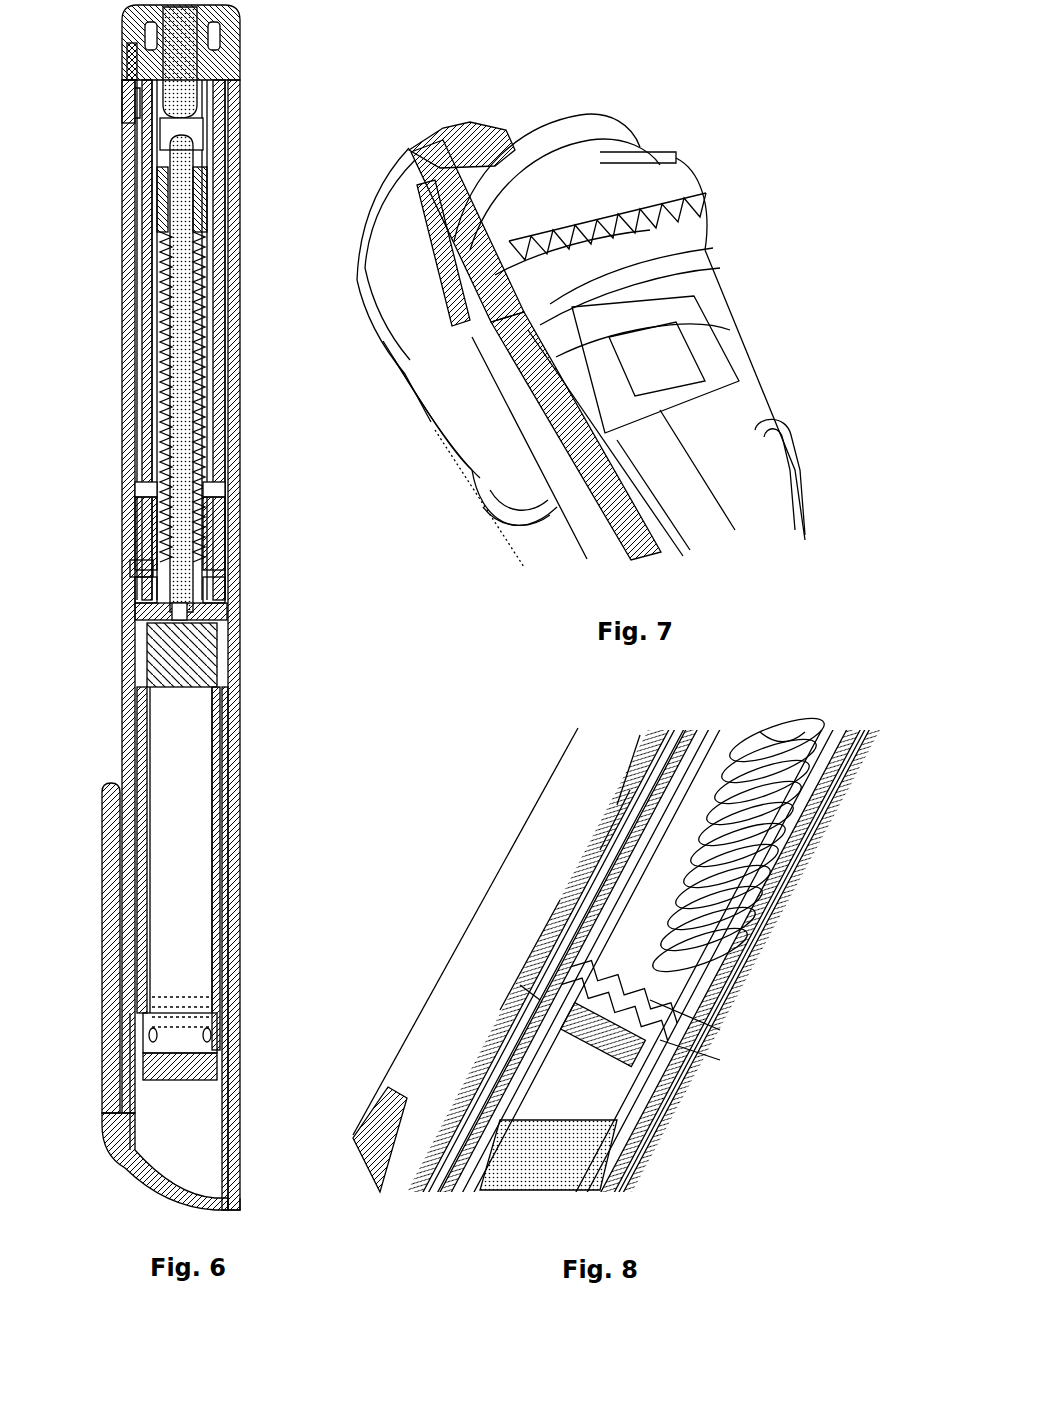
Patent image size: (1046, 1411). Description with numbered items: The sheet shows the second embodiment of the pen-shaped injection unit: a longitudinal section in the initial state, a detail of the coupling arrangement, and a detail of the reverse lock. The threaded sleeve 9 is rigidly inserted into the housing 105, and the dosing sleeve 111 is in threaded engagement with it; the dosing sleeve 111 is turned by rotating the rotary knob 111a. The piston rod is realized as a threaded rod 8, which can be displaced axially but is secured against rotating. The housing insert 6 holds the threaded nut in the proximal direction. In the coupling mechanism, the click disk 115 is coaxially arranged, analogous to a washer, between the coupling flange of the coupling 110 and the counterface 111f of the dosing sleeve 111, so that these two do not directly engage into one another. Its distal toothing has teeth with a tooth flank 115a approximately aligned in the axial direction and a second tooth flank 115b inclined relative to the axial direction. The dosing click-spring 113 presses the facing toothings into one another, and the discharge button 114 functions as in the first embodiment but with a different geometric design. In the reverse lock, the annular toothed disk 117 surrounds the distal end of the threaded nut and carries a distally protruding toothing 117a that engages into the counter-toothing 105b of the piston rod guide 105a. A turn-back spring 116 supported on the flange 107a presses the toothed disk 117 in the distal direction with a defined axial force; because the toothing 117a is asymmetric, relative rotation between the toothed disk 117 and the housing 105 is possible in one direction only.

In FIG. 6, the housing insert 6 is at (137, 495).
In FIG. 8, the housing insert 6 is at (617, 803).
In FIG. 6, the threaded rod 8 is at (178, 157).
In FIG. 8, the threaded rod 8 is at (782, 733).
In FIG. 6, the threaded sleeve 9 is at (124, 113).
In FIG. 7, the threaded sleeve 9 is at (527, 503).
In FIG. 6, the housing 105 is at (237, 523).
In FIG. 7, the housing 105 is at (473, 408).
In FIG. 8, the housing 105 is at (525, 997).
In FIG. 8, the piston rod guide 105a is at (515, 996).
In FIG. 6, the counter-toothing 105b is at (220, 577).
In FIG. 8, the flange 107a is at (613, 823).
In FIG. 6, the coupling 110 is at (218, 104).
In FIG. 7, the coupling 110 is at (737, 403).
In FIG. 6, the dosing sleeve 111 is at (217, 142).
In FIG. 7, the rotary knob 111a is at (398, 277).
In FIG. 7, the counterface 111f is at (507, 303).
In FIG. 6, the dosing click-spring 113 is at (190, 55).
In FIG. 6, the discharge button 114 is at (185, 33).
In FIG. 7, the discharge button 114 is at (413, 153).
In FIG. 6, the click disk 115 is at (128, 51).
In FIG. 7, the click disk 115 is at (668, 175).
In FIG. 7, the tooth flank 115a is at (592, 220).
In FIG. 7, the tooth flank 115b is at (555, 225).
In FIG. 6, the turn-back spring 116 is at (152, 522).
In FIG. 8, the turn-back spring 116 is at (780, 913).
In FIG. 6, the toothed disk 117 is at (130, 563).
In FIG. 8, the toothed disk 117 is at (692, 1018).
In FIG. 8, the toothing 117a is at (700, 1047).